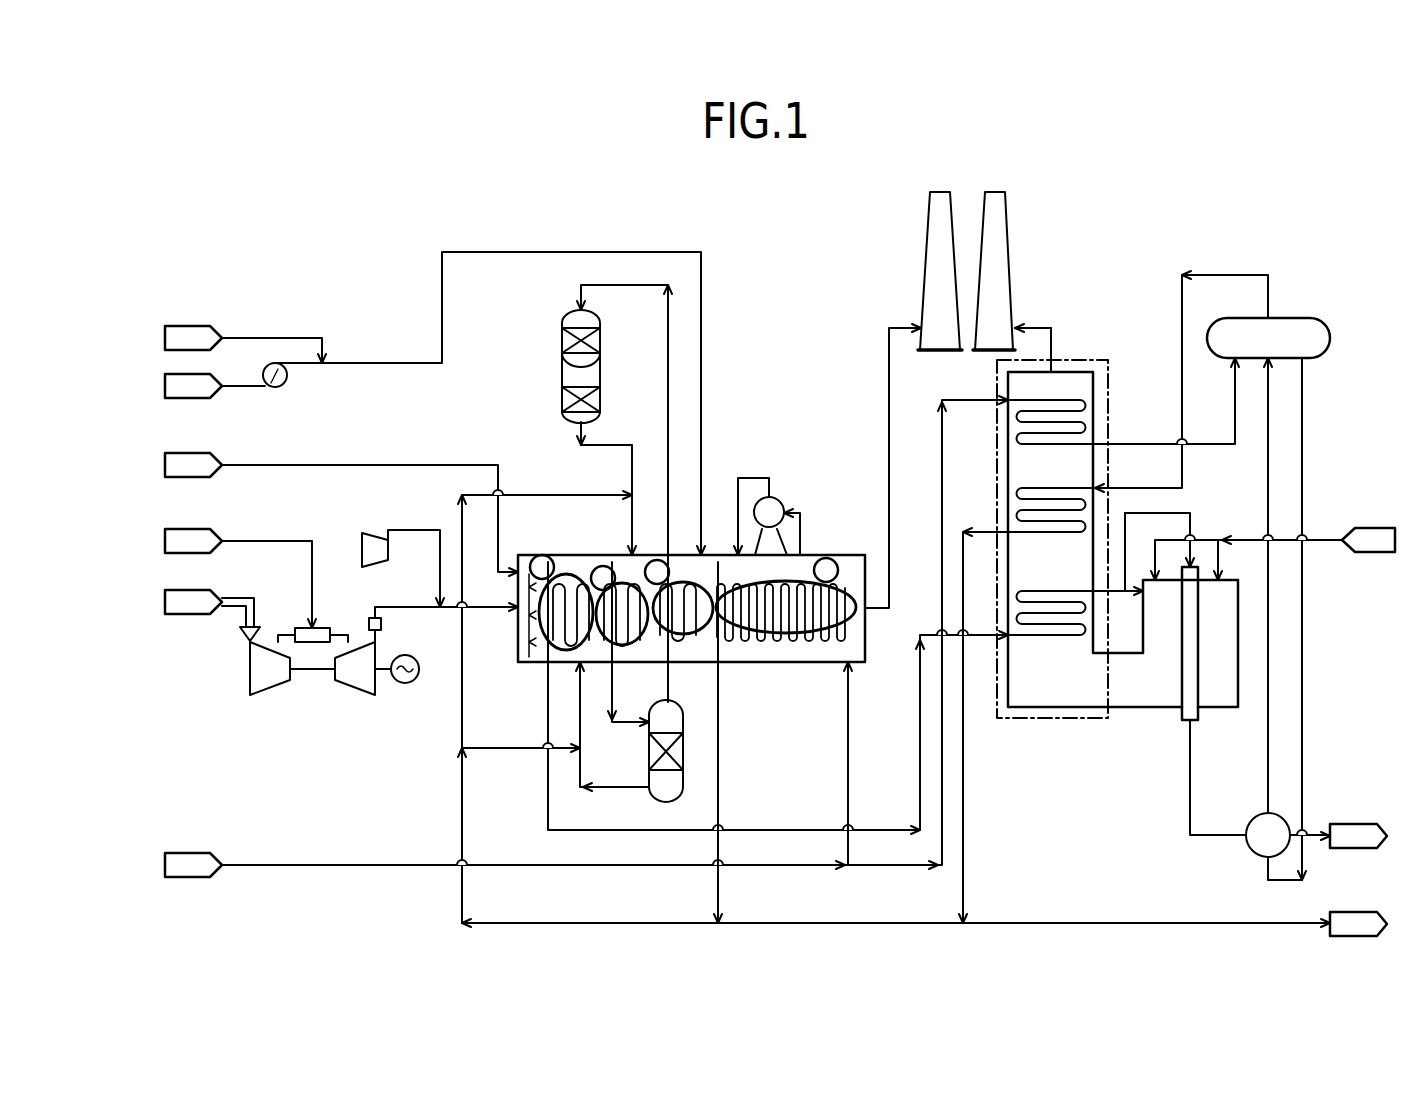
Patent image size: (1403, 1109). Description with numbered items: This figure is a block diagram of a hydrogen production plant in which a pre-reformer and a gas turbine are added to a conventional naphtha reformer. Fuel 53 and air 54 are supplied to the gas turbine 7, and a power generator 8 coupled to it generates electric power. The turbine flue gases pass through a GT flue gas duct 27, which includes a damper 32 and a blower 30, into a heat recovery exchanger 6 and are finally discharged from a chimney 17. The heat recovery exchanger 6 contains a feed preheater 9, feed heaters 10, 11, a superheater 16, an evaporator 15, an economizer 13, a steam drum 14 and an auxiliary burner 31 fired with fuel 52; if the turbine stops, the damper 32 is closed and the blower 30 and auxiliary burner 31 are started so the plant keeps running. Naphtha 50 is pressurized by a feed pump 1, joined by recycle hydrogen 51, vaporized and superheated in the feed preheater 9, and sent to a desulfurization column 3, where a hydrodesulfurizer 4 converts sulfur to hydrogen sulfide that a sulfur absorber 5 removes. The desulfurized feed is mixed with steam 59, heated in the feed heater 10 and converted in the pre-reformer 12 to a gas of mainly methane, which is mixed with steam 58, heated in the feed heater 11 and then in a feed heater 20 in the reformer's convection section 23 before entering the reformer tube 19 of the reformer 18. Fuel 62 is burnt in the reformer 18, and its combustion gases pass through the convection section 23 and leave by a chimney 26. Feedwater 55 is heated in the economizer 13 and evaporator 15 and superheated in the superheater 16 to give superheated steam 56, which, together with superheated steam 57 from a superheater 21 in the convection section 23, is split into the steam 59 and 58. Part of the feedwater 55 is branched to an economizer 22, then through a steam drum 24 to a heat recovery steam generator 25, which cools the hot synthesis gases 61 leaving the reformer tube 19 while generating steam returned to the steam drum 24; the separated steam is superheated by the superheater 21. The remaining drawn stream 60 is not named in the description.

The feed pump 1 is at (280, 387).
The desulfurization column 3 is at (602, 375).
The hydrodesulfurizer 4 is at (559, 343).
The sulfur absorber 5 is at (561, 403).
The heat recovery exchanger 6 is at (518, 662).
The gas turbine 7 is at (313, 670).
The power generator 8 is at (405, 684).
The feed preheater 9 is at (694, 646).
The feed heater 10 is at (610, 556).
The feed heater 11 is at (557, 556).
The pre-reformer 12 is at (648, 800).
The economizer 13 is at (818, 642).
The steam drum 14 is at (782, 500).
The evaporator 15 is at (778, 642).
The superheater 16 is at (734, 642).
The chimney 17 is at (922, 268).
The reformer 18 is at (1143, 708).
The reformer tube 19 is at (1200, 720).
The feed heater 20 is at (1045, 636).
The superheater 21 is at (1044, 534).
The economizer 22 is at (1094, 427).
The reformer's convection section 23 is at (1050, 720).
The steam drum 24 is at (1305, 318).
The heat recovery steam generator 25 is at (1252, 852).
The chimney 26 is at (1011, 267).
The GT flue gas duct 27 is at (406, 606).
The blower 30 is at (358, 540).
The auxiliary burner 31 is at (526, 630).
The damper 32 is at (368, 622).
The naphtha 50 is at (162, 386).
The recycle hydrogen 51 is at (162, 338).
The fuel 52 is at (162, 465).
The fuel 53 is at (162, 541).
The air 54 is at (162, 602).
The feedwater 55 is at (162, 865).
The superheated steam 56 is at (722, 895).
The superheated steam 57 is at (959, 895).
The steam 58 is at (498, 750).
The steam 59 is at (545, 493).
The product stream 60 is at (1359, 912).
The synthesis gases 61 is at (1359, 824).
The fuel 62 is at (1380, 528).